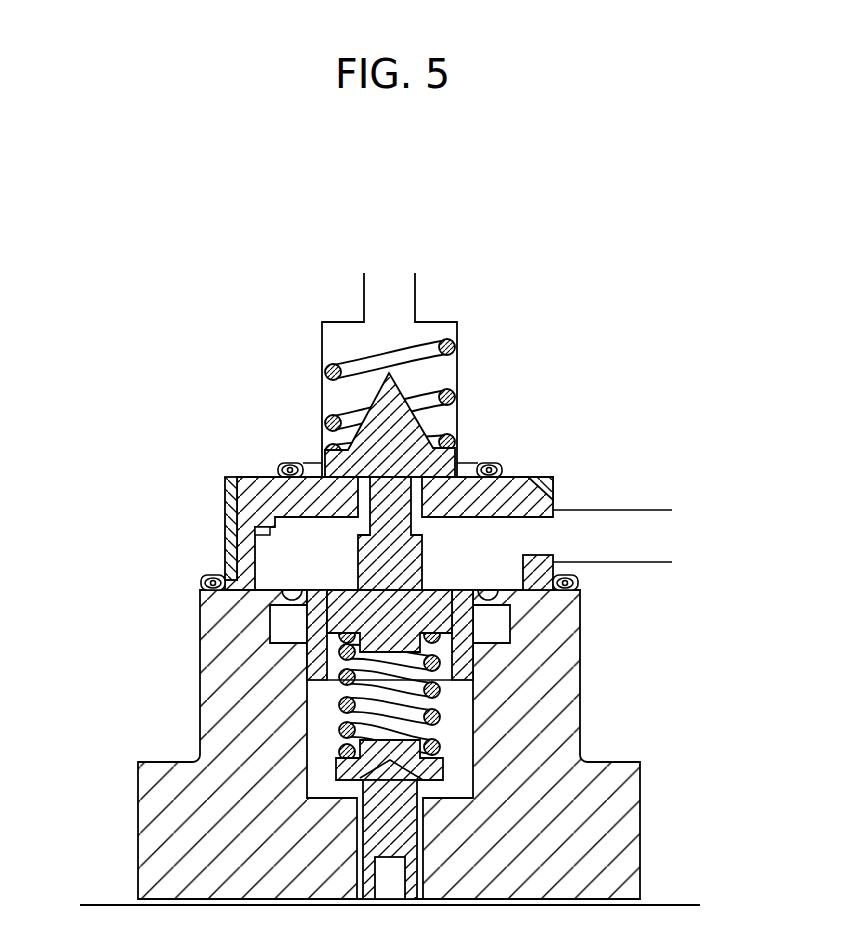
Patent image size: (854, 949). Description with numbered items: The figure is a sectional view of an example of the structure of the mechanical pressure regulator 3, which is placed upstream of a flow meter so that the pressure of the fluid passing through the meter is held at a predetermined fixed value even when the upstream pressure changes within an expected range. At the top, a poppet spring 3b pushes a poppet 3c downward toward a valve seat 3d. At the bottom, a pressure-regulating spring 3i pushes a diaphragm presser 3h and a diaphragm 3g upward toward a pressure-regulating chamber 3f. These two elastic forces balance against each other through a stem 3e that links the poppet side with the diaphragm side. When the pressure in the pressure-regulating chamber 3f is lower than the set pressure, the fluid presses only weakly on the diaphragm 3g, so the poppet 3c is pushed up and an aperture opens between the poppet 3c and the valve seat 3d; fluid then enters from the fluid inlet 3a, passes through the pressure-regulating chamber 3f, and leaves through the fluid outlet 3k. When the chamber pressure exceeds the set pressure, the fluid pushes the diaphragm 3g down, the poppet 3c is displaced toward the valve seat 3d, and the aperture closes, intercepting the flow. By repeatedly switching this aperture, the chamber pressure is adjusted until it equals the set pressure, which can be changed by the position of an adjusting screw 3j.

The mechanical pressure regulator 3 is at (541, 379).
The fluid inlet 3a is at (365, 297).
The poppet spring 3b is at (432, 350).
The poppet 3c is at (342, 395).
The valve seat 3d is at (511, 477).
The stem 3e is at (372, 492).
The pressure-regulating chamber 3f is at (268, 575).
The diaphragm 3g is at (510, 596).
The diaphragm presser 3h is at (420, 621).
The pressure-regulating spring 3i is at (352, 732).
The adjusting screw 3j is at (372, 870).
The fluid outlet 3k is at (660, 553).